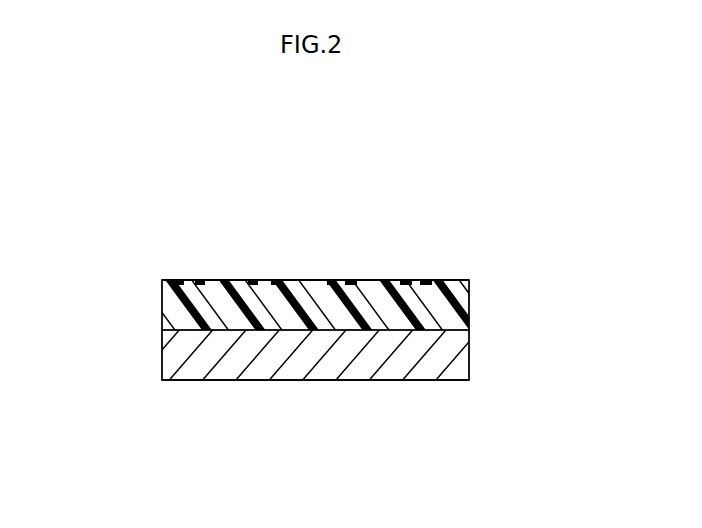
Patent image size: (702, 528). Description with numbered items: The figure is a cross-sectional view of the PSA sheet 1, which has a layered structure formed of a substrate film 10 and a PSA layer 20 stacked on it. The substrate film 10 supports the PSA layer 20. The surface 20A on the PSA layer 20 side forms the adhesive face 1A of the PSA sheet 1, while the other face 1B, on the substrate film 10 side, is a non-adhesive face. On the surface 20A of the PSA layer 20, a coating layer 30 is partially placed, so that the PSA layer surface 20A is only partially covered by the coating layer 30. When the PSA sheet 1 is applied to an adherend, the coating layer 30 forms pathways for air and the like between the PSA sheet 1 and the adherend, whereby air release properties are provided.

The PSA sheet 1 is at (130, 163).
The adhesive face 1A is at (450, 280).
The non-adhesive face 1B is at (355, 382).
The substrate film 10 is at (469, 359).
The PSA layer 20 is at (469, 309).
The surface of PSA layer 20A is at (227, 282).
The coating layer 30 is at (180, 282).